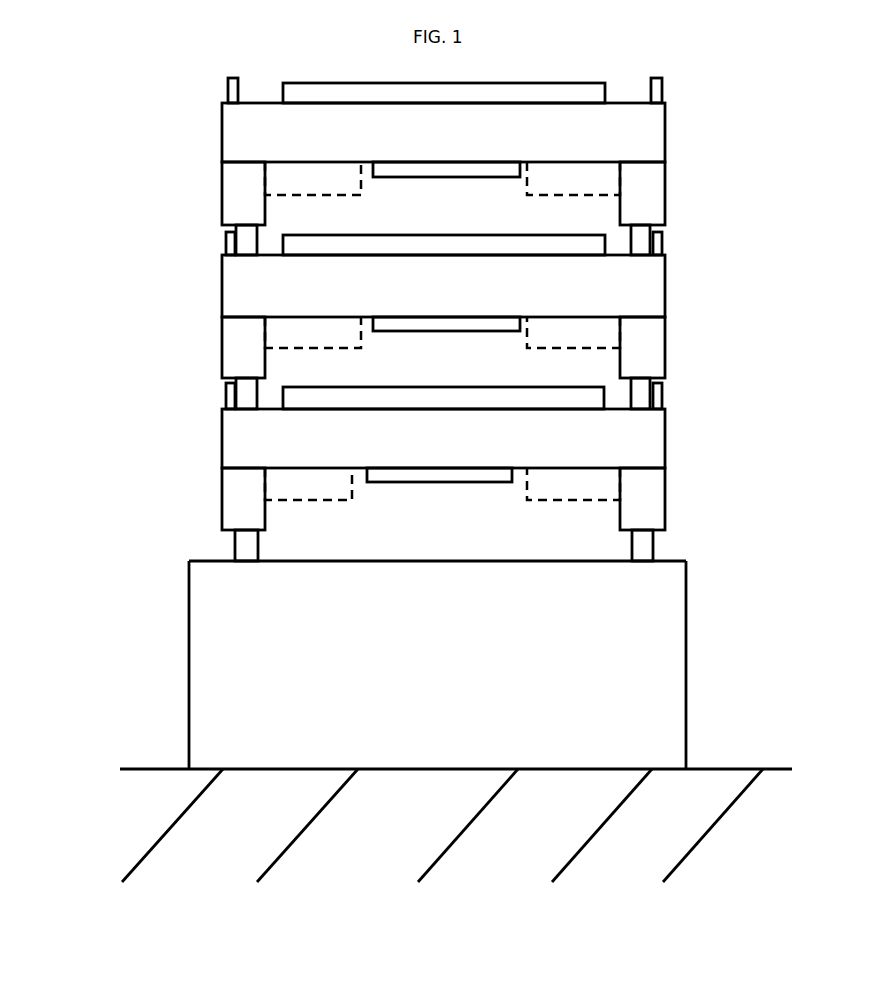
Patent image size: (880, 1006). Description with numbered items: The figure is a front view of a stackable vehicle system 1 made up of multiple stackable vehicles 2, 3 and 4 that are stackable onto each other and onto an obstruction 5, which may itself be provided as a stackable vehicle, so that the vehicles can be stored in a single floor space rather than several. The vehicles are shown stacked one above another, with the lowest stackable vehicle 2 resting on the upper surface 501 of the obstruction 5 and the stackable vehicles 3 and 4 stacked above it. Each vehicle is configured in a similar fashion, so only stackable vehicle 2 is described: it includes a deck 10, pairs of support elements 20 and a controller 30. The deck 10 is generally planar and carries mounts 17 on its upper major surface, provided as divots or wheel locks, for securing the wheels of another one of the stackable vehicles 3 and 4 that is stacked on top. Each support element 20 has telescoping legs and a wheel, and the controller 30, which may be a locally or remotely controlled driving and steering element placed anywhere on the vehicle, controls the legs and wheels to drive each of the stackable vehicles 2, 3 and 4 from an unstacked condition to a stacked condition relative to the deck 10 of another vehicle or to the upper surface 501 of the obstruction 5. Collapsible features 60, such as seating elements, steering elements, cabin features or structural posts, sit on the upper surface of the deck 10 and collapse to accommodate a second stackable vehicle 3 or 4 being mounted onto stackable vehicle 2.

The stackable vehicle system 1 is at (122, 132).
The stackable vehicle 2 is at (665, 467).
The stackable vehicle 3 is at (665, 298).
The stackable vehicle 4 is at (665, 159).
The obstruction 5 is at (189, 653).
The deck 10 is at (443, 438).
The mounts 17 is at (226, 401).
The support elements 20 is at (222, 518).
The controller 30 is at (445, 477).
The collapsible features 60 is at (312, 398).
The upper surface 501 is at (318, 561).